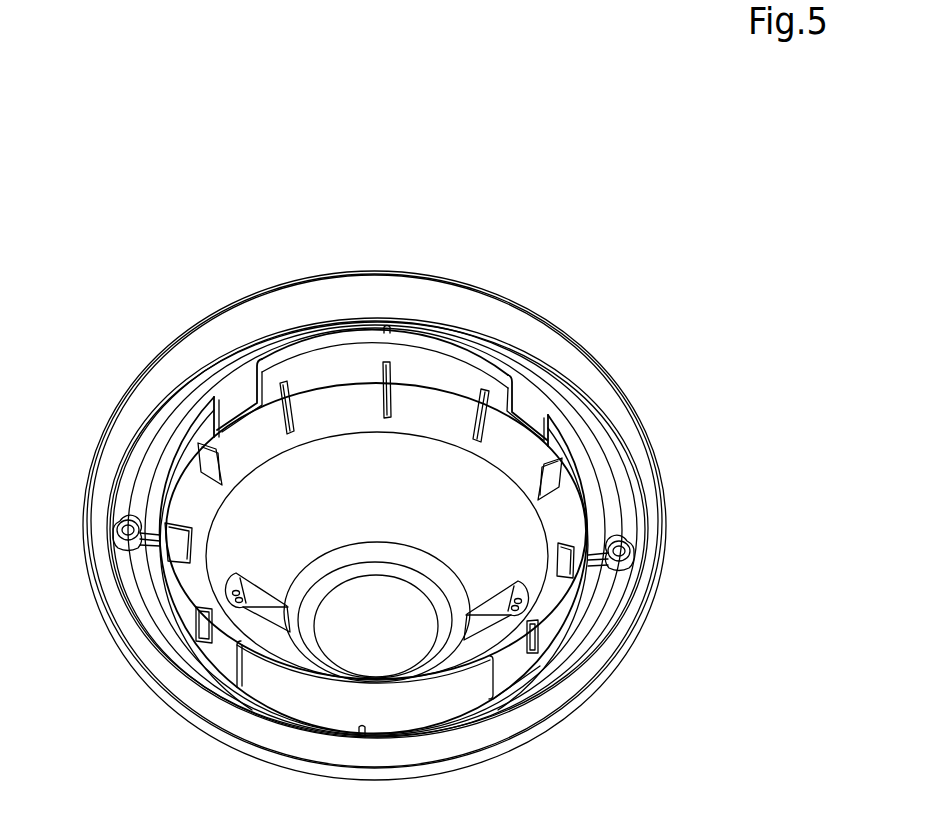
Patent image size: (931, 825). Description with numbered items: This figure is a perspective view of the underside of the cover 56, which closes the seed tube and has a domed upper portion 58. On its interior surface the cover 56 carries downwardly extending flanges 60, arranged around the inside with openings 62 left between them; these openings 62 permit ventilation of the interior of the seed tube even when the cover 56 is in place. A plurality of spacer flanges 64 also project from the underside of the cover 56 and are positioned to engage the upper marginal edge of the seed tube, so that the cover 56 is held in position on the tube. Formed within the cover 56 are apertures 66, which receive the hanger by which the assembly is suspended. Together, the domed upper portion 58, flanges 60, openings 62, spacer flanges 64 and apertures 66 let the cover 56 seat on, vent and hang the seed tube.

The cover 56 is at (579, 318).
The domed upper portion 58 is at (399, 534).
The downwardly extending flanges 60 is at (320, 363).
The openings 62 is at (240, 407).
The spacer flanges 64 is at (221, 467).
The apertures 66 is at (120, 540).